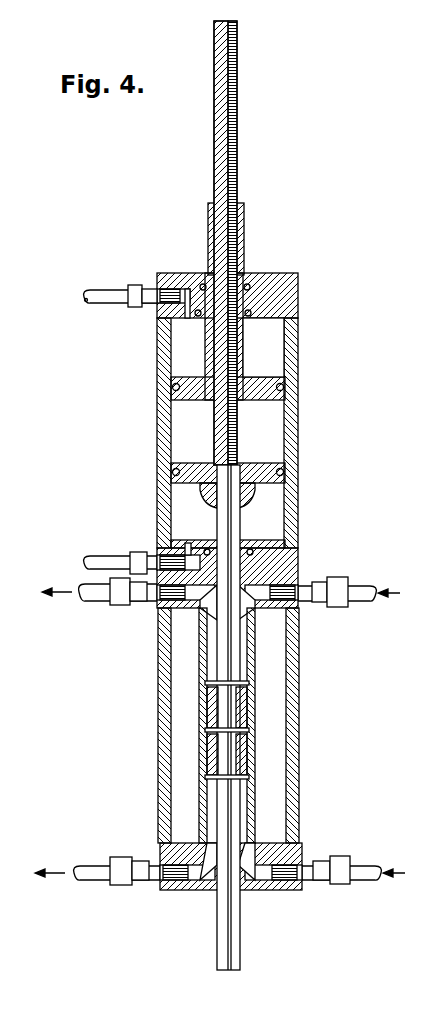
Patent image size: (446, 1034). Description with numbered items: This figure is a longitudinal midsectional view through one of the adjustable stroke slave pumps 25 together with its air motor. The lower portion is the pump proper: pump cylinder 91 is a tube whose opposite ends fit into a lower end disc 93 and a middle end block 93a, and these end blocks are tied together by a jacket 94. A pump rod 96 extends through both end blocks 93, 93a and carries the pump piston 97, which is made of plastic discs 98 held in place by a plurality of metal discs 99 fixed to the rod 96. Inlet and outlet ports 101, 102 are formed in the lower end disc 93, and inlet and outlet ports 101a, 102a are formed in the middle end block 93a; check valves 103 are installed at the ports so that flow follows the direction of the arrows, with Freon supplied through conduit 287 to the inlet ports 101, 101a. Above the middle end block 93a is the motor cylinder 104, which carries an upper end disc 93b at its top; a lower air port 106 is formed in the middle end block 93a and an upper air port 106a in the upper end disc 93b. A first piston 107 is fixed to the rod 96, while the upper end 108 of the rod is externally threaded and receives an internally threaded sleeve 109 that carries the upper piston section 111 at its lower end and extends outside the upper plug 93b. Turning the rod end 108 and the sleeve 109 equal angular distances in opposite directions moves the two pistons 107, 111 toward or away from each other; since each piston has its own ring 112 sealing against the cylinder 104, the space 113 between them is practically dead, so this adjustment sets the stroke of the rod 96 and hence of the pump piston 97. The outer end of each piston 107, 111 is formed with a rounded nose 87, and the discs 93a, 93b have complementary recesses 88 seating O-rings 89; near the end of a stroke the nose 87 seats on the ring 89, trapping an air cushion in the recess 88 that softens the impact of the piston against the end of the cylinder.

The upper end of rod 108 is at (240, 176).
The recess 88 is at (250, 287).
The upper end disc 93b is at (290, 285).
The upper air port 106a is at (172, 315).
The O-ring 89 is at (203, 312).
The rounded nose 87 is at (203, 368).
The internally threaded sleeve 109 is at (244, 350).
The ring 112 is at (288, 386).
The upper piston section 111 is at (172, 400).
The space 113 is at (185, 437).
The first piston 107 is at (268, 462).
The motor cylinder 104 is at (297, 480).
The lower air port 106 is at (178, 548).
The inlet port 101a is at (290, 568).
The conduit 287 is at (360, 590).
The check valve 103 is at (130, 597).
The outlet port 102a is at (196, 598).
The middle end block 93a is at (186, 617).
The pump rod 96 is at (235, 660).
The slave pump 25 is at (305, 690).
The metal disc 99 is at (207, 683).
The plastic disc 98 is at (247, 722).
The piston 97 is at (247, 760).
The jacket 94 is at (298, 752).
The pump cylinder 91 is at (255, 815).
The lower end disc 93 is at (185, 845).
The outlet port 102 is at (205, 882).
The inlet port 101 is at (262, 880).